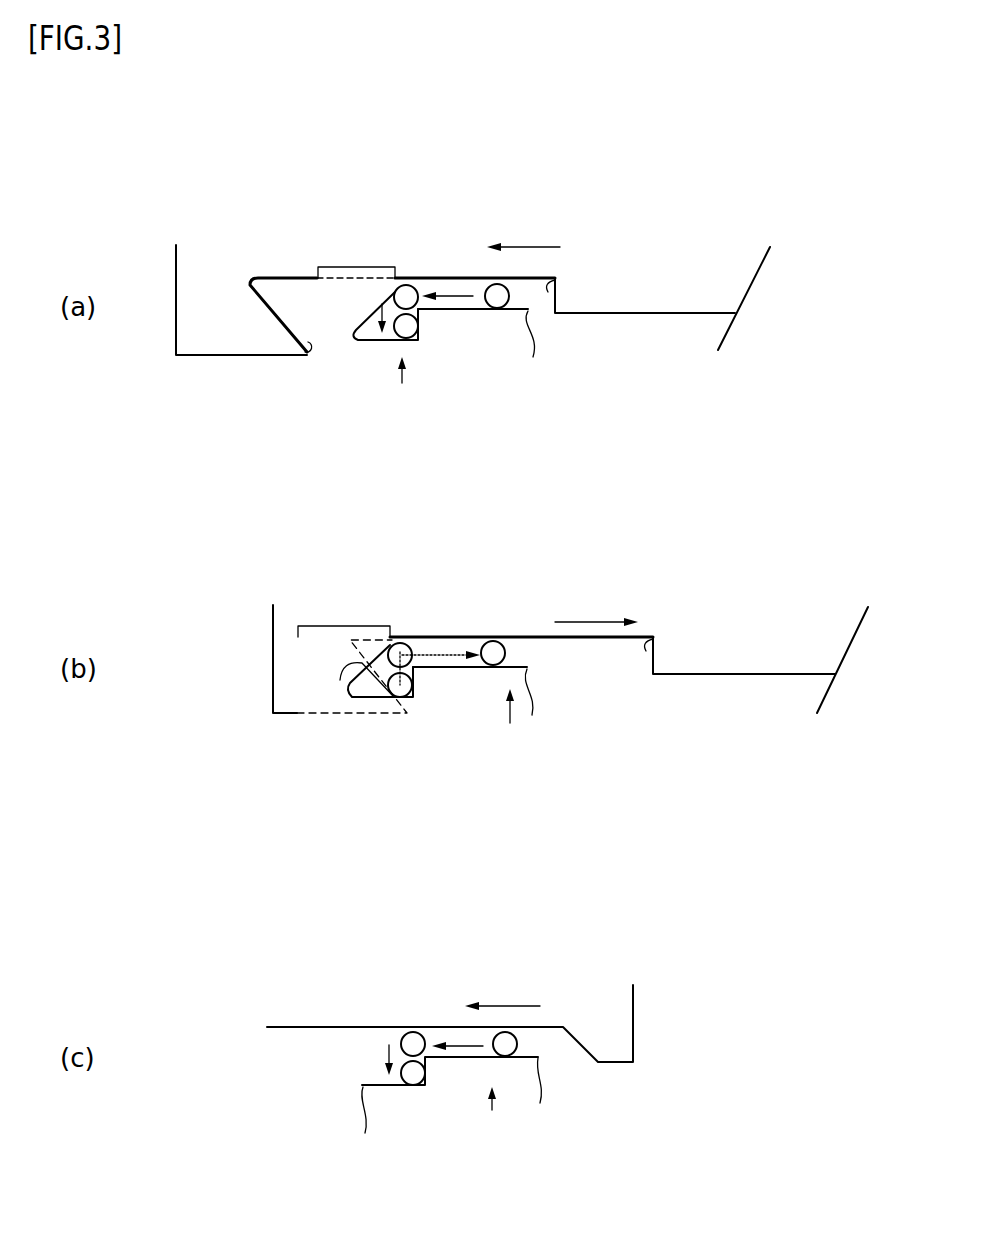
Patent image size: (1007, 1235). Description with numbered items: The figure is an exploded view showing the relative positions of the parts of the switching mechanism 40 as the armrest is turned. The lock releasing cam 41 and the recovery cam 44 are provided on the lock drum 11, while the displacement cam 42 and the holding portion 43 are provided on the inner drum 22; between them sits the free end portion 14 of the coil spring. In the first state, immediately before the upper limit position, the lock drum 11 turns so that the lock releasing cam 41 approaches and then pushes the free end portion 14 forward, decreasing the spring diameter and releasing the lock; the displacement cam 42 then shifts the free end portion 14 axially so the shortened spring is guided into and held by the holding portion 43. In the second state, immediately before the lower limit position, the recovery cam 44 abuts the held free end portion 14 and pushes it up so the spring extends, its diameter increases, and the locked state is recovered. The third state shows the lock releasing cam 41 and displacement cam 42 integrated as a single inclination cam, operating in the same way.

The lock drum 11 is at (190, 311).
The free end portion 14 is at (510, 304).
The inner drum 22 is at (402, 383).
The switching mechanism 40 is at (443, 253).
The lock releasing cam 41 is at (560, 282).
The displacement cam 42 is at (318, 268).
The holding portion 43 is at (418, 338).
The recovery cam 44 is at (307, 350).